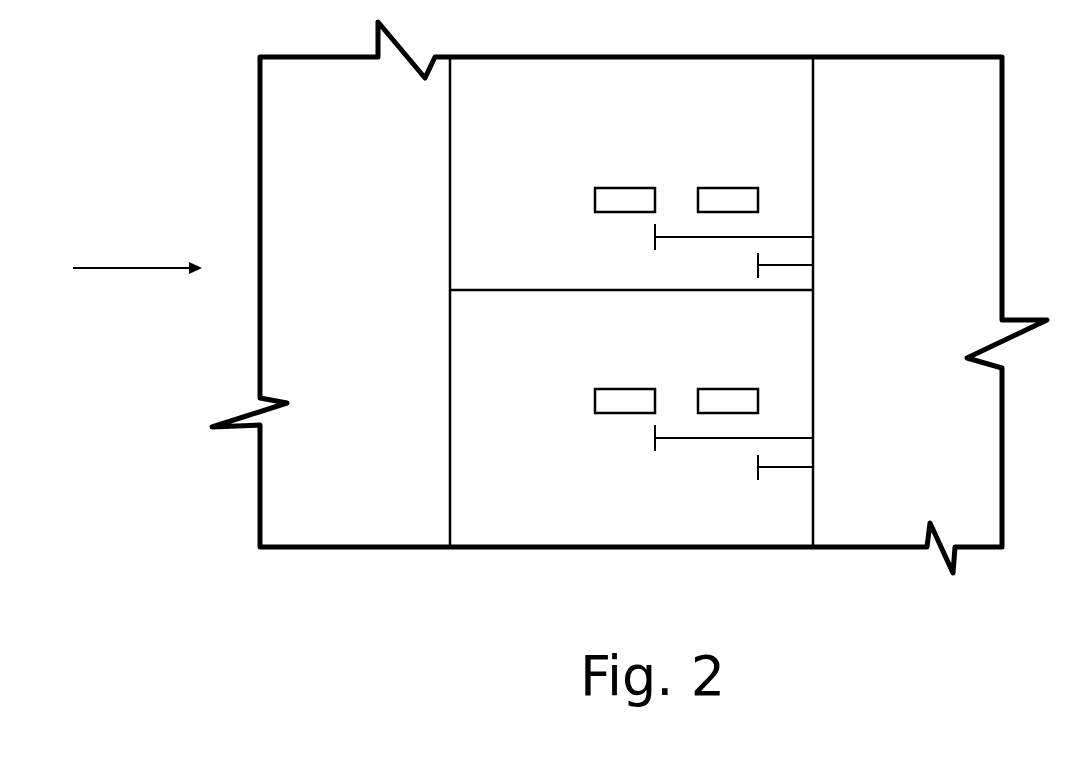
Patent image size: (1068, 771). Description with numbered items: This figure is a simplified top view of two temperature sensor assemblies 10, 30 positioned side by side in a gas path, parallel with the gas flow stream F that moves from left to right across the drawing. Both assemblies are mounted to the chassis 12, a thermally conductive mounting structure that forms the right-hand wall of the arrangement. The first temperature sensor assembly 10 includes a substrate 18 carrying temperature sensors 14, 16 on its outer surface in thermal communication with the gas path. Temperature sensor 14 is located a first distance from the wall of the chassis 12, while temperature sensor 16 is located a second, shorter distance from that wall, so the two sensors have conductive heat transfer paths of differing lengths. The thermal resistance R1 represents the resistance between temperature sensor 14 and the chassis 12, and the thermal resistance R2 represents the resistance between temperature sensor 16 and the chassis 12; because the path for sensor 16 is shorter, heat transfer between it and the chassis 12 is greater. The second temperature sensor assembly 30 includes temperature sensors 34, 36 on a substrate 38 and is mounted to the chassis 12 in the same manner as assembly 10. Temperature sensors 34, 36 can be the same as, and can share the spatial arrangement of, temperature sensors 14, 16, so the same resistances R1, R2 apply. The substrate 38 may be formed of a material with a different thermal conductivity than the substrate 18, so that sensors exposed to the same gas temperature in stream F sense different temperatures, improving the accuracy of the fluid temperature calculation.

The temperature sensor assembly 10 is at (470, 382).
The chassis 12 is at (902, 211).
The temperature sensor 14 is at (618, 389).
The temperature sensor 16 is at (726, 389).
The substrate 18 is at (513, 477).
The temperature sensor assembly 30 is at (470, 182).
The temperature sensor 34 is at (618, 188).
The temperature sensor 36 is at (726, 188).
The substrate 38 is at (513, 121).
The thermal resistance R1 is at (712, 459).
The thermal resistance R2 is at (785, 265).
The gas flow stream F is at (133, 268).